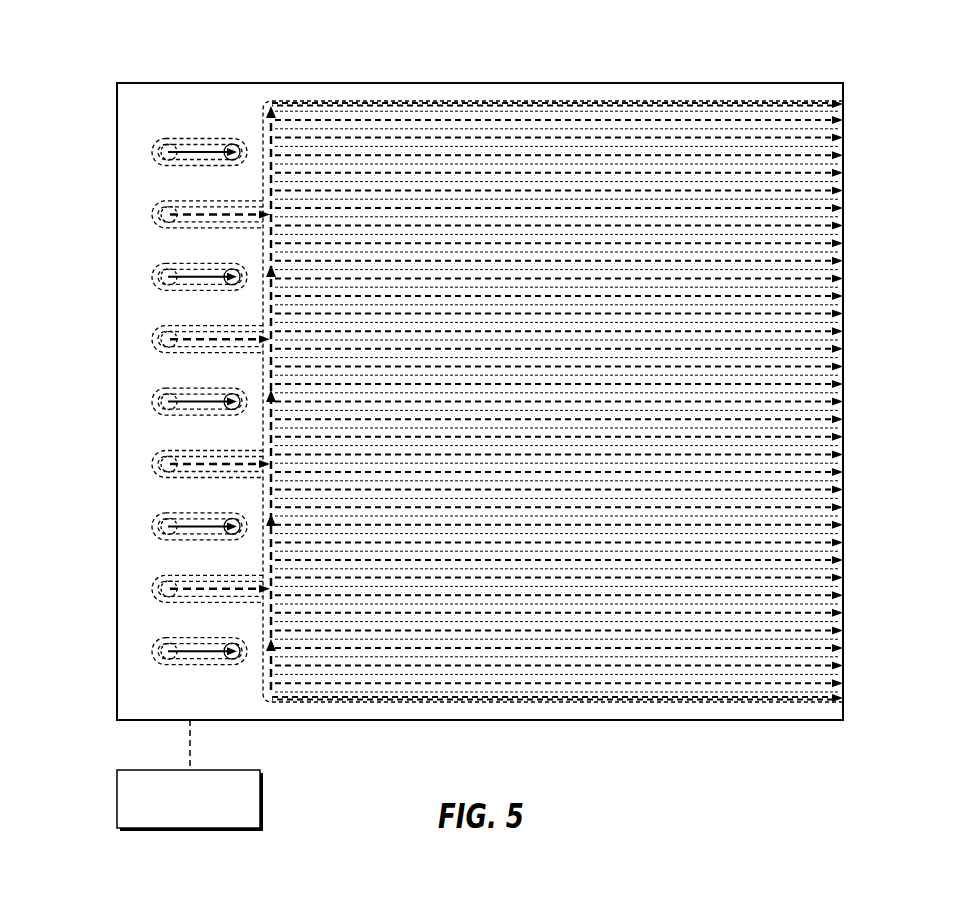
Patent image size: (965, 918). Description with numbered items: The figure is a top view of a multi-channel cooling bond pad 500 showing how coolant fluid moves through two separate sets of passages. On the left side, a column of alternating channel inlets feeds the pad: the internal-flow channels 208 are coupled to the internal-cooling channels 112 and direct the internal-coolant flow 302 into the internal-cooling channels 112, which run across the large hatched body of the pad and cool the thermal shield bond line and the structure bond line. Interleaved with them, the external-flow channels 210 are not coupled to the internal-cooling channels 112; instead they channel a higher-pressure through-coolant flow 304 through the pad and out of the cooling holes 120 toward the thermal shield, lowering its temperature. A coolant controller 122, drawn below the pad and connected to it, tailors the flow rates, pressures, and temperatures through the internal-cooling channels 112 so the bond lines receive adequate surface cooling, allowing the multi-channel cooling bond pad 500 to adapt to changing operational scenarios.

The multi-channel cooling bond pad 500 is at (954, 174).
The internal-cooling channels 112 is at (733, 112).
The internal-coolant flow 302 is at (200, 200).
The internal-flow channels 208 is at (183, 222).
The cooling holes 120 is at (162, 150).
The through-coolant flow 304 is at (197, 148).
The external-flow channels 210 is at (216, 143).
The coolant controller 122 is at (117, 778).